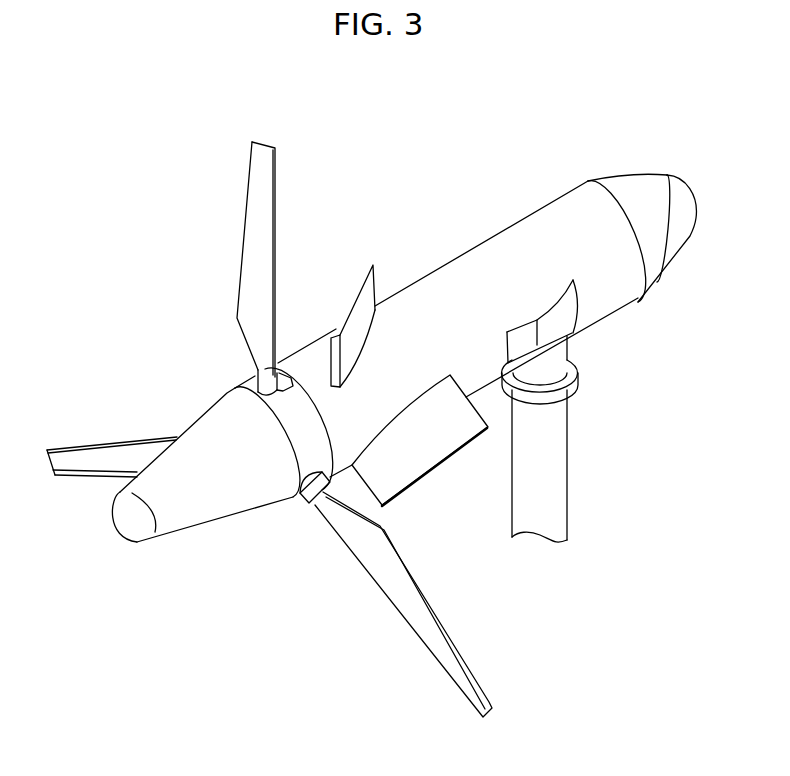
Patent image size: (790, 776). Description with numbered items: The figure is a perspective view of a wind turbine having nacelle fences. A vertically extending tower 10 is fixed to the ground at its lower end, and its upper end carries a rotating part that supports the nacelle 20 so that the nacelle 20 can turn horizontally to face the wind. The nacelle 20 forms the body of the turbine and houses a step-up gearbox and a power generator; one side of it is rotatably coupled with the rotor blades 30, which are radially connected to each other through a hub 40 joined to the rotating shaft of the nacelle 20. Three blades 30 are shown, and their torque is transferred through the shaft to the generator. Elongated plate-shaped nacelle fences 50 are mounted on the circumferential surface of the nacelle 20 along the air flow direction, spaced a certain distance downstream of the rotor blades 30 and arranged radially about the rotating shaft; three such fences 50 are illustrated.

The tower 10 is at (563, 452).
The nacelle 20 is at (481, 236).
The rotor blades 30 is at (257, 220).
The hub 40 is at (192, 518).
The nacelle fence 50 is at (345, 294).